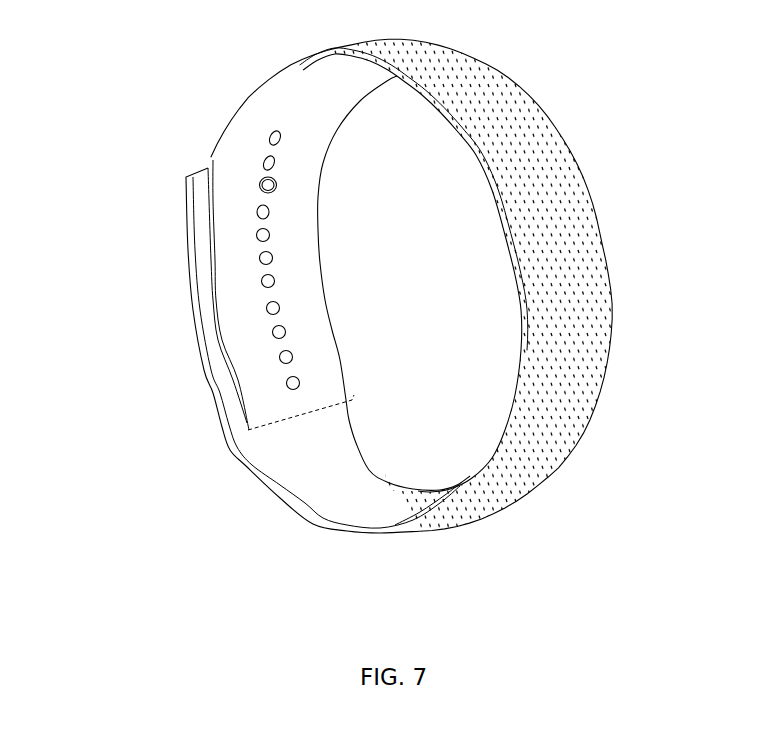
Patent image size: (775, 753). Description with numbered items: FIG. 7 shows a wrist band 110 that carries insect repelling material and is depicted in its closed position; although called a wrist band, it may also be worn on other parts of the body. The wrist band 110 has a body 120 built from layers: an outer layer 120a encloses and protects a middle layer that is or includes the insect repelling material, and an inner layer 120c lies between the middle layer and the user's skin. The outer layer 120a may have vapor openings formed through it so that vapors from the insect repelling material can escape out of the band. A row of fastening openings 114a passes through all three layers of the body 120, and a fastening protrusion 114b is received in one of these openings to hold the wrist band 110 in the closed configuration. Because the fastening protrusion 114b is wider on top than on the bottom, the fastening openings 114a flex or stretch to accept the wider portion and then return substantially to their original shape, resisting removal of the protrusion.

The wrist band 110 is at (597, 152).
The fastening openings 114a is at (287, 384).
The fastening protrusion 114b is at (260, 186).
The body 120 is at (613, 302).
The outer layer 120a is at (575, 406).
The inner layer 120c is at (258, 472).